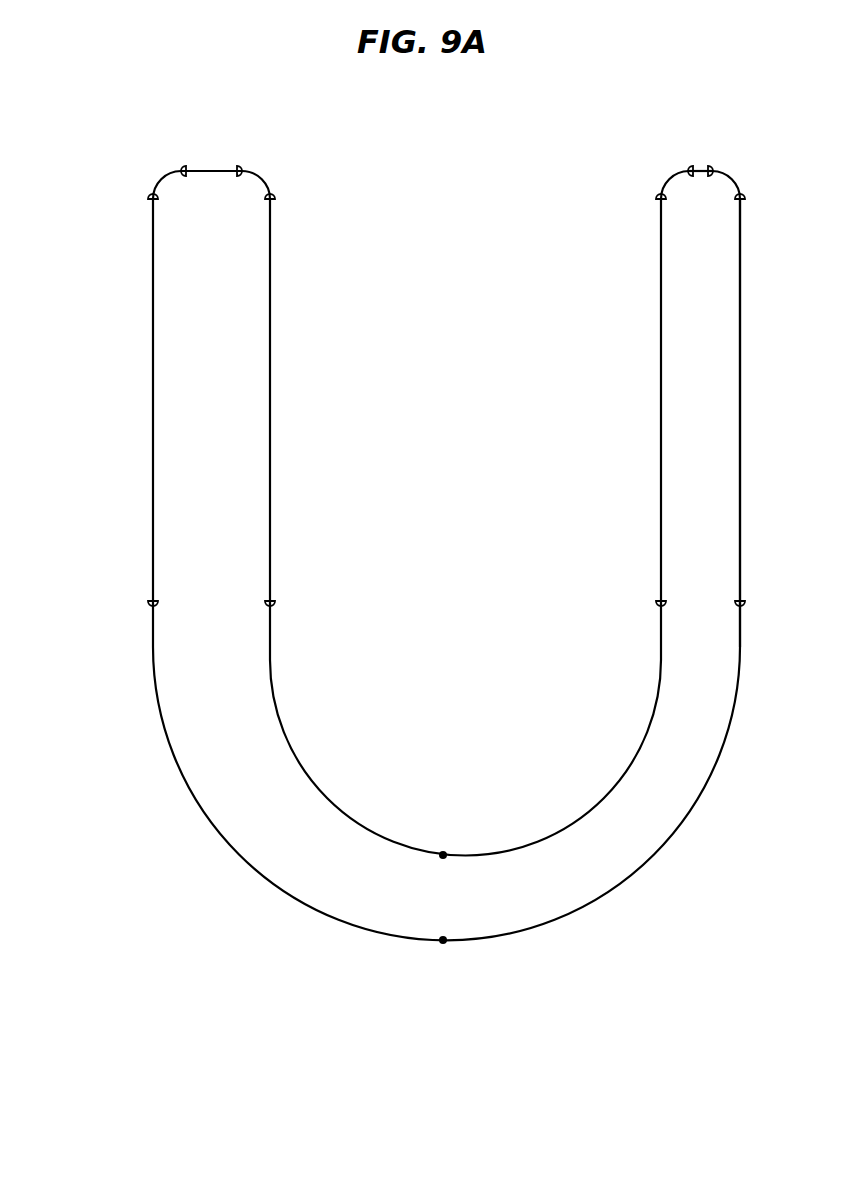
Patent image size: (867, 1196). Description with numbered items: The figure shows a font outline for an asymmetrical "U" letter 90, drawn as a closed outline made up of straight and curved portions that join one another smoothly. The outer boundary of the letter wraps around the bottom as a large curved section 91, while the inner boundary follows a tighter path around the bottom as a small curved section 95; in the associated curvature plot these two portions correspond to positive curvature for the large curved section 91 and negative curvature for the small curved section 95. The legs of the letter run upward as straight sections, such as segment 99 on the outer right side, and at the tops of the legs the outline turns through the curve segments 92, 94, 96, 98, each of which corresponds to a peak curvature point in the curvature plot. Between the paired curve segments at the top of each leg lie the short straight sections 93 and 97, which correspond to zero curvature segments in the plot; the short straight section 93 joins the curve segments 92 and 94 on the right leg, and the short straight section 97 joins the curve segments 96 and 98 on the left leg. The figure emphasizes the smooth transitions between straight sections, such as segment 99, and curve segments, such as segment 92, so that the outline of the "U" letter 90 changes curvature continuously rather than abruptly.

The asymmetrical "U" letter 90 is at (108, 303).
The large curved section 91 is at (443, 940).
The curve segment 92 is at (733, 182).
The short straight section 93 is at (699, 170).
The curve segment 94 is at (665, 181).
The small curved section 95 is at (443, 855).
The curve segment 96 is at (262, 180).
The short straight section 97 is at (208, 170).
The curve segment 98 is at (158, 183).
The straight section 99 is at (740, 405).